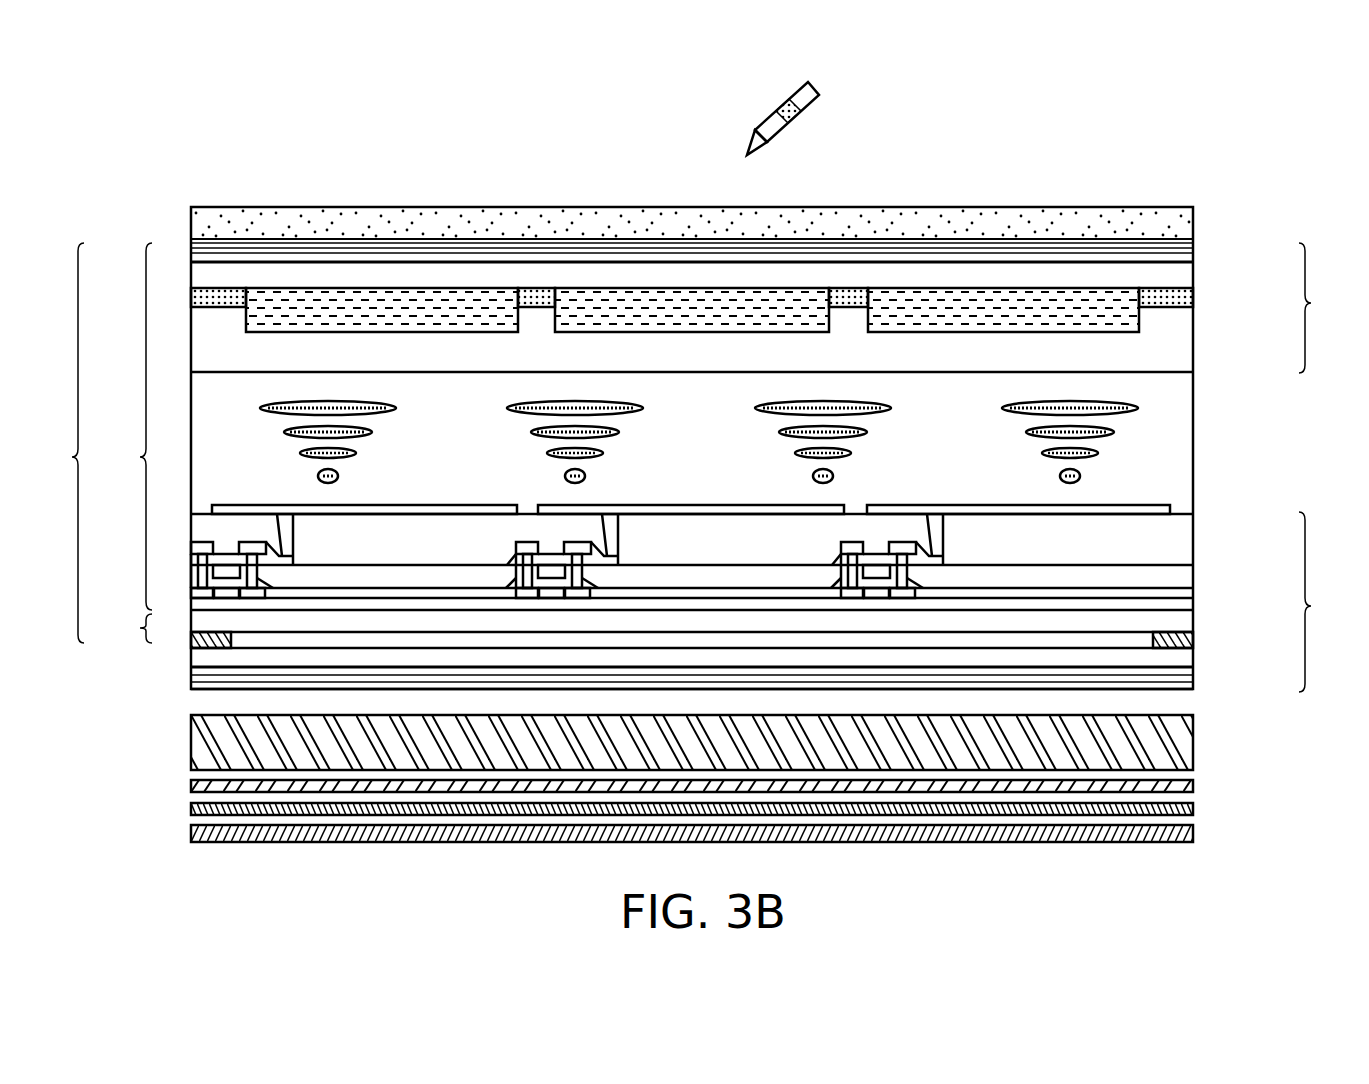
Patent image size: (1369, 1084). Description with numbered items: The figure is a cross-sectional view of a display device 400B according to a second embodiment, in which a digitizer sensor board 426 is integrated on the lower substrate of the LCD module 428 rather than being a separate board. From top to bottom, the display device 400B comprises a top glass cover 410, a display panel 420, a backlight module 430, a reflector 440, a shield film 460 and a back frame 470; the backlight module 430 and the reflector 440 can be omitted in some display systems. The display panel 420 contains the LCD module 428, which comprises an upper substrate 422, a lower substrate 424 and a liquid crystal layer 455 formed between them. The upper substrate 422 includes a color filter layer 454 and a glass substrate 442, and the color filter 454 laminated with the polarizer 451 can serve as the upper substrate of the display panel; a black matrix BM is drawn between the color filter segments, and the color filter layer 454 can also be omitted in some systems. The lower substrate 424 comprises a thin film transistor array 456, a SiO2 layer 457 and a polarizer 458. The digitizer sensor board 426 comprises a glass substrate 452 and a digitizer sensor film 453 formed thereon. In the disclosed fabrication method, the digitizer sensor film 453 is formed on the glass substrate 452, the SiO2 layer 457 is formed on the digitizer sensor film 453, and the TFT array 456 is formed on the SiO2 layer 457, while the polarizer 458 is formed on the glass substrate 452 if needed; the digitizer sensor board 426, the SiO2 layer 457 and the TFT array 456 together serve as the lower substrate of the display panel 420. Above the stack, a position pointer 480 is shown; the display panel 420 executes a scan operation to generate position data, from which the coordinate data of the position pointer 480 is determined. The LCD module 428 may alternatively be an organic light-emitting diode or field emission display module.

The display device 400B is at (355, 890).
The top glass cover 410 is at (1195, 225).
The polarizer 451 is at (1195, 250).
The glass substrate 442 is at (1195, 275).
The black matrix BM is at (1195, 298).
The color filter layer 454 is at (1209, 338).
The upper substrate 422 is at (1333, 308).
The liquid crystal layer 455 is at (1195, 441).
The thin film transistor (TFT) array 456 is at (1195, 573).
The SiO2 layer 457 is at (1195, 617).
The digitizer sensor film 453 is at (1195, 638).
The glass substrate 452 is at (1195, 660).
The polarizer 458 is at (1195, 682).
The lower substrate 424 is at (1333, 602).
The display panel 420 is at (55, 443).
The LCD module 428 is at (122, 426).
The digitizer sensor board 426 is at (122, 627).
The backlight module 430 is at (1195, 742).
The reflector 440 is at (1195, 786).
The shield film 460 is at (1195, 809).
The back frame 470 is at (1195, 833).
The position pointer 480 is at (792, 120).